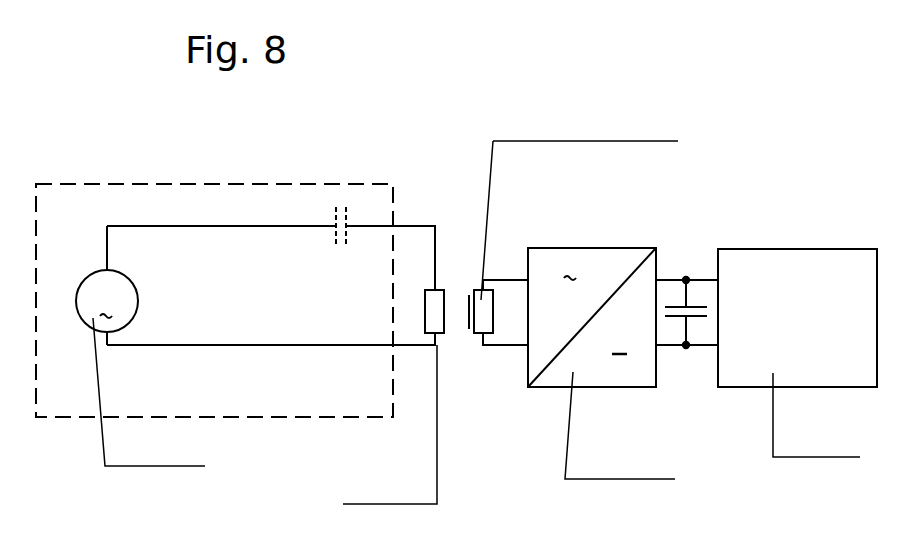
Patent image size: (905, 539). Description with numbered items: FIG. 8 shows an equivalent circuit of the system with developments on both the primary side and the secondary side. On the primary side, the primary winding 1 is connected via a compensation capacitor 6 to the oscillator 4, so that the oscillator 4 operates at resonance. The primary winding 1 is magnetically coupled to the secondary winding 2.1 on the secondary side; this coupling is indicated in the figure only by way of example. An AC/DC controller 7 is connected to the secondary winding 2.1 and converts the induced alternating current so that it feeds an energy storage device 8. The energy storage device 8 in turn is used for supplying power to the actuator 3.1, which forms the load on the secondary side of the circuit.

The oscillator 4 is at (89, 288).
The compensation capacitor 6 is at (335, 222).
The primary winding 1 is at (439, 290).
The secondary winding 2.1 is at (483, 323).
The AC/DC controller 7 is at (567, 248).
The energy storage device 8 is at (693, 307).
The actuator 3.1 is at (778, 270).